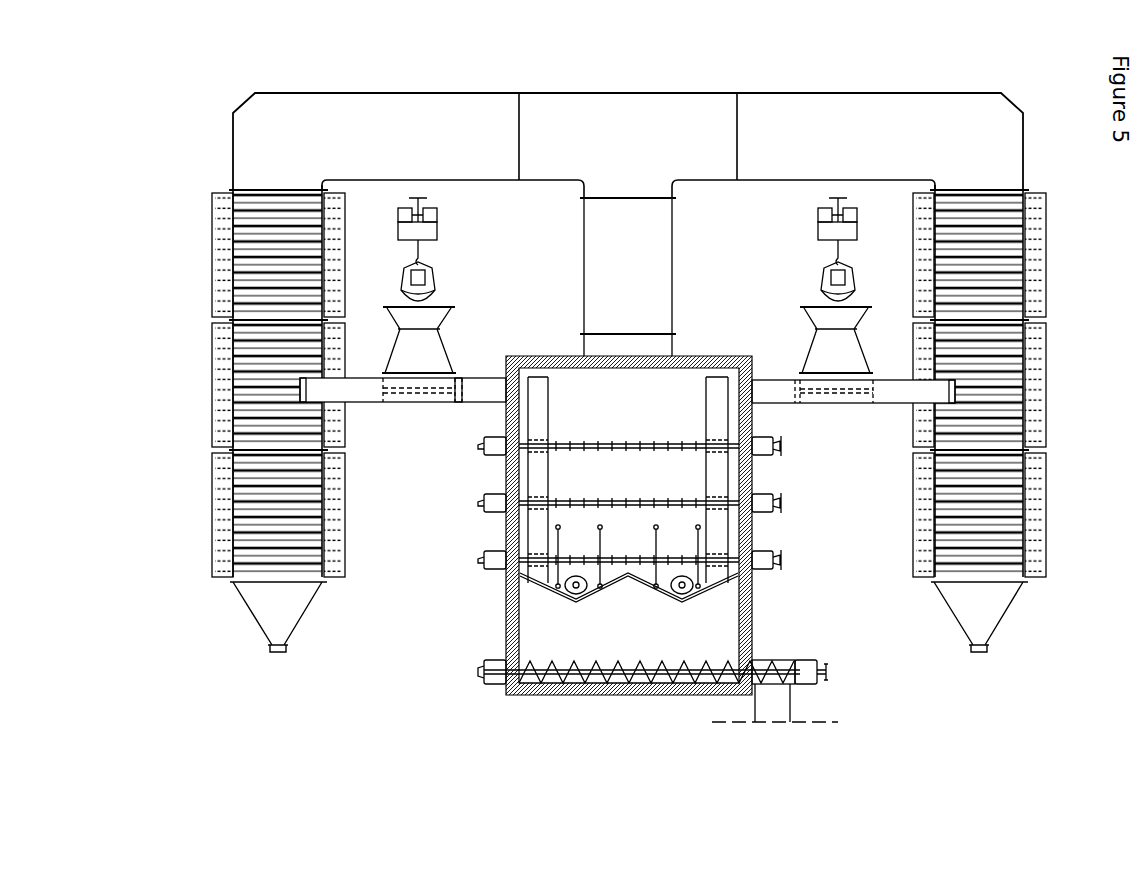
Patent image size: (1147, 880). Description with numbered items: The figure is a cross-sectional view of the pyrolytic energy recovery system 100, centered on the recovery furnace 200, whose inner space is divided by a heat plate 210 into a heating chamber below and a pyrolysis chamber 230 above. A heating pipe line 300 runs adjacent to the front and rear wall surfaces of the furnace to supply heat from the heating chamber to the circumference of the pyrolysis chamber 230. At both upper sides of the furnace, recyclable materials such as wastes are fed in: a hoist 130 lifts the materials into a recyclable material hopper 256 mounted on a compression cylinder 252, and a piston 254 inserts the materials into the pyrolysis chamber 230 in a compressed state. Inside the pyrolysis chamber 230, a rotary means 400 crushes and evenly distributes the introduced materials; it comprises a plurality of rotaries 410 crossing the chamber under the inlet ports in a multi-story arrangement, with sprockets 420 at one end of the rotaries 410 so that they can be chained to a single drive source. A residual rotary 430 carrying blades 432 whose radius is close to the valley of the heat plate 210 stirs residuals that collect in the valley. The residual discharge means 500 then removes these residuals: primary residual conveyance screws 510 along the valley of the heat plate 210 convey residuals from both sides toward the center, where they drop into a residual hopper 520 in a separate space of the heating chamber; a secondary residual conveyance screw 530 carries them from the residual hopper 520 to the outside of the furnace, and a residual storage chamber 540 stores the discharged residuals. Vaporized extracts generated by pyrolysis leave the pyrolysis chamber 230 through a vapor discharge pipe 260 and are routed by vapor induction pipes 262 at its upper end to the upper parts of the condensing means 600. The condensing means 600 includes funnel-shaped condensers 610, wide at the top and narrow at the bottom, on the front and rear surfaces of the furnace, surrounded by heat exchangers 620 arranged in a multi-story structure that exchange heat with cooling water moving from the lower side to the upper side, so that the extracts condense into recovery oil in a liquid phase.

The pyrolytic energy recovery system 100 is at (164, 129).
The hoist 130 is at (440, 276).
The recovery furnace 200 is at (503, 612).
The heat plate 210 is at (524, 580).
The pyrolysis chamber 230 is at (614, 416).
The compression cylinder 252 is at (480, 385).
The piston 254 is at (462, 385).
The recyclable material hopper 256 is at (428, 352).
The vapor discharge pipe 260 is at (626, 222).
The vapor induction pipe 262 is at (387, 113).
The heating pipe line 300 is at (713, 366).
The rotary means 400 is at (862, 445).
The rotary 410 is at (673, 458).
The sprocket 420 is at (782, 442).
The residual rotary 430 is at (683, 545).
The blade 432 is at (750, 571).
The residual discharge means 500 is at (620, 778).
The primary residual conveyance screw 510 is at (690, 592).
The residual hopper 520 is at (651, 626).
The secondary residual conveyance screw 530 is at (609, 684).
The residual storage chamber 540 is at (770, 715).
The condensing means 600 is at (198, 308).
The condenser 610 is at (240, 518).
The heat exchanger 620 is at (212, 373).